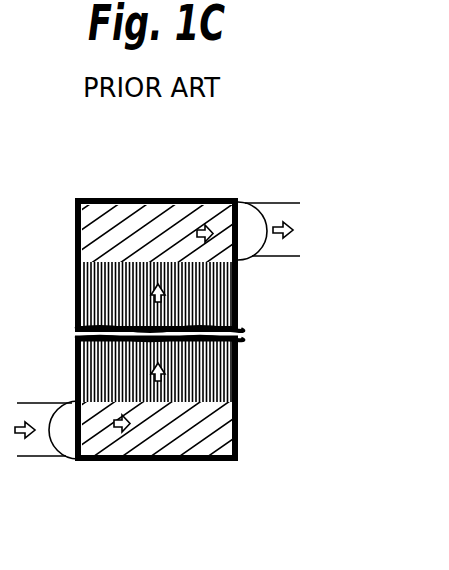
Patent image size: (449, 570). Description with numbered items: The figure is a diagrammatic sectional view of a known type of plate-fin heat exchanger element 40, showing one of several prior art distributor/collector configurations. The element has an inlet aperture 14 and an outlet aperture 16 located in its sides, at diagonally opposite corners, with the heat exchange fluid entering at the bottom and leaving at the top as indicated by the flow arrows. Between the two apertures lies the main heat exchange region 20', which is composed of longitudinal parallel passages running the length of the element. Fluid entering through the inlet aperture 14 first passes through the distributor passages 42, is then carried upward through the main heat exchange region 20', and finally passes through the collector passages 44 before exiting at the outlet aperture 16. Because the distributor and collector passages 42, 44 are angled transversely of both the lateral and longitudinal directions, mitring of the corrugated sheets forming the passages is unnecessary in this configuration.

The heat exchanger element 40 is at (201, 197).
The collector passages 44 is at (135, 220).
The distributor passages 42 is at (183, 432).
The main heat exchange region 20' is at (186, 362).
The outlet aperture 16 is at (222, 203).
The inlet aperture 14 is at (66, 450).